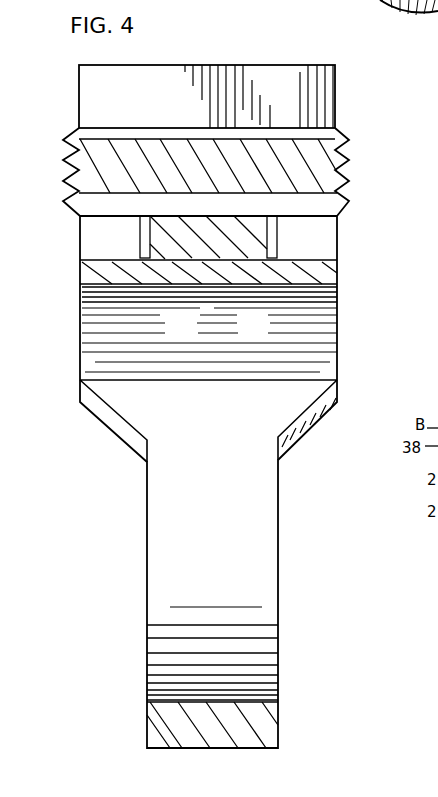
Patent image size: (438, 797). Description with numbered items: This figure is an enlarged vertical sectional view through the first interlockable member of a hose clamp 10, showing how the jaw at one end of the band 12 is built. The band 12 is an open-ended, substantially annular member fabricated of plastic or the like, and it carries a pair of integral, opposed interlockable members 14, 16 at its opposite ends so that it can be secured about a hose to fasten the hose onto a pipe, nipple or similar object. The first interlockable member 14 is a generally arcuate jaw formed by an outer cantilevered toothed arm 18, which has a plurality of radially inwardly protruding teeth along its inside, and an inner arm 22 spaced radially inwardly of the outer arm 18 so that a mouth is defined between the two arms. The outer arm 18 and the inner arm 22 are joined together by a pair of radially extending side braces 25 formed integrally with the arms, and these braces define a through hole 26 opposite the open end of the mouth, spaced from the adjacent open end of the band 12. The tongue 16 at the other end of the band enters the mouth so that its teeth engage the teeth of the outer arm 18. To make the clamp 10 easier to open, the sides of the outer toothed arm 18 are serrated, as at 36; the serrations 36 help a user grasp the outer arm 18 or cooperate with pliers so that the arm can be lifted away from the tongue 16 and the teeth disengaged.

The clamp 10 is at (345, 329).
The band 12 is at (262, 563).
The first interlockable member 14 is at (337, 104).
The tongue 16 is at (210, 237).
The outer cantilevered toothed arm 18 is at (300, 147).
The inner arm 22 is at (264, 270).
The side braces 25 is at (102, 227).
The through hole 26 is at (143, 236).
The serrations 36 is at (66, 149).